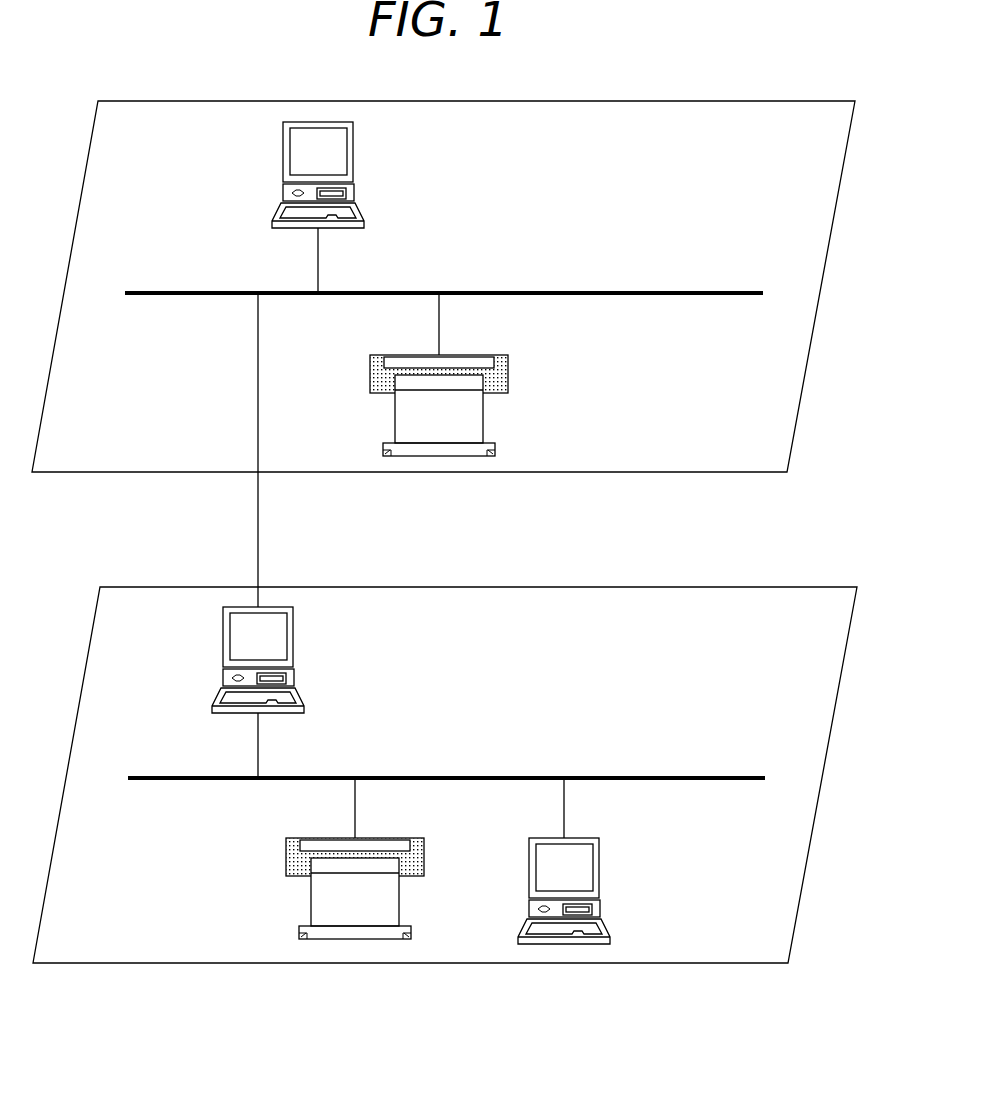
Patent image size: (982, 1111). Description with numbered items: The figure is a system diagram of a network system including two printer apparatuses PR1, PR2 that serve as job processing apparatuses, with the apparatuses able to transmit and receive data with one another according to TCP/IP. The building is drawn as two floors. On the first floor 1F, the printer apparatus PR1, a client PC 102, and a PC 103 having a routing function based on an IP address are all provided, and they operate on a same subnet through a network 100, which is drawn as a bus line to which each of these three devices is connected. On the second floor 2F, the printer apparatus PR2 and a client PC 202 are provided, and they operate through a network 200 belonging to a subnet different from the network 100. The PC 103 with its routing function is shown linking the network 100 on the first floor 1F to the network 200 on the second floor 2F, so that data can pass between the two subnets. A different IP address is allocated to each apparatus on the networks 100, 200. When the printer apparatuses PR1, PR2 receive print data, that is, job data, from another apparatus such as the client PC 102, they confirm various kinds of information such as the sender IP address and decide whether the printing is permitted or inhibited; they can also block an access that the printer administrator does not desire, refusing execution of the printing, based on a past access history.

The second floor 2F is at (443, 286).
The first floor 1F is at (445, 775).
The network 200 is at (696, 290).
The network 100 is at (701, 776).
The client PC 202 is at (354, 143).
The printer apparatus PR2 is at (508, 375).
The PC having a routing function 103 is at (222, 645).
The printer apparatus PR1 is at (286, 856).
The client PC 102 is at (600, 855).